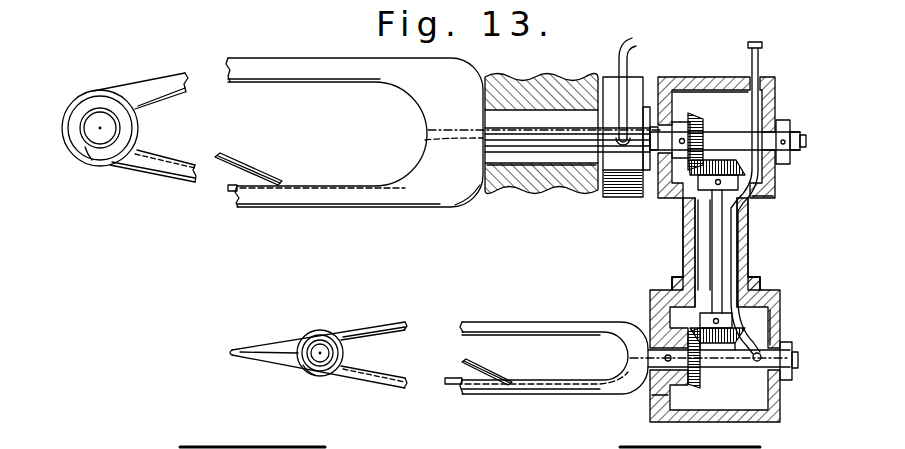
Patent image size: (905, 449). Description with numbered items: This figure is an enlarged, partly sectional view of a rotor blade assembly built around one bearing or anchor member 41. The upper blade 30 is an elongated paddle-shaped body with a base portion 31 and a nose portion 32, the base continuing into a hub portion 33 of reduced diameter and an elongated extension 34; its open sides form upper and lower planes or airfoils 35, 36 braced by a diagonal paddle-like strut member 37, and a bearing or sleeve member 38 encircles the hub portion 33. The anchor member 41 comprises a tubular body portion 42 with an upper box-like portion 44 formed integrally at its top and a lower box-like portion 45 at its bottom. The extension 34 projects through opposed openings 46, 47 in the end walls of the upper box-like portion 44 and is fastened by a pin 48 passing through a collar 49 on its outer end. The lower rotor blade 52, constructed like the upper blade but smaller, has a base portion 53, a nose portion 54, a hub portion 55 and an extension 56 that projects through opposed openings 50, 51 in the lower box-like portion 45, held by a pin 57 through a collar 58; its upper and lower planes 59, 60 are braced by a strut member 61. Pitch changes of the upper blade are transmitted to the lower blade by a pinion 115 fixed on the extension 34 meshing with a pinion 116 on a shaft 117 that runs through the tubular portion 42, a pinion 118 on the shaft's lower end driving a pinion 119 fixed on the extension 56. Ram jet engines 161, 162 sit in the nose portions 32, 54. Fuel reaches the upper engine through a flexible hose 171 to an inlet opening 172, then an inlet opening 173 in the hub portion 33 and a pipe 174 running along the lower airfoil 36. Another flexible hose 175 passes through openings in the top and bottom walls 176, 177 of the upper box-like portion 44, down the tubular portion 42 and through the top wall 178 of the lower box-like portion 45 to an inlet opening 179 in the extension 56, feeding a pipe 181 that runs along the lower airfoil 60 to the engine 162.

The upper blade 30 is at (348, 56).
The base portion 31 is at (447, 194).
The nose portion 32 is at (68, 98).
The hub portion 33 is at (545, 152).
The extension 34 is at (728, 130).
The upper plane or airfoil 35 is at (284, 73).
The lower plane or airfoil 36 is at (314, 196).
The strut member 37 is at (238, 168).
The bearing or sleeve member 38 is at (560, 78).
The bearing or anchor member 41 is at (682, 240).
The tubular body portion 42 is at (752, 250).
The upper box-like portion 44 is at (668, 75).
The lower box-like portion 45 is at (780, 412).
The opening 46 is at (676, 130).
The opening 47 is at (778, 102).
The pin 48 is at (788, 122).
The collar 49 is at (782, 164).
The opening 50 is at (652, 400).
The opening 51 is at (780, 336).
The lower rotor blade 52 is at (510, 320).
The base portion 53 is at (628, 386).
The nose portion 54 is at (268, 338).
The hub portion 55 is at (660, 340).
The extension 56 is at (728, 368).
The pin 57 is at (790, 352).
The collar 58 is at (793, 370).
The upper plane or airfoil 59 is at (403, 322).
The lower plane or airfoil 60 is at (402, 388).
The strut member 61 is at (478, 366).
The pinion 115 is at (698, 118).
The pinion 116 is at (668, 192).
The shaft 117 is at (722, 258).
The pinion 118 is at (768, 308).
The pinion 119 is at (692, 376).
The ram jet engine 161 is at (90, 160).
The ram jet engine 162 is at (313, 374).
The flexible hose 171 is at (644, 48).
The inlet opening 172 is at (603, 190).
The inlet opening 173 is at (506, 182).
The pipe 174 is at (230, 190).
The flexible hose 175 is at (762, 54).
The top wall 176 is at (690, 80).
The bottom wall 177 is at (762, 198).
The top wall 178 is at (672, 285).
The inlet opening 179 is at (756, 364).
The pipe 181 is at (452, 386).